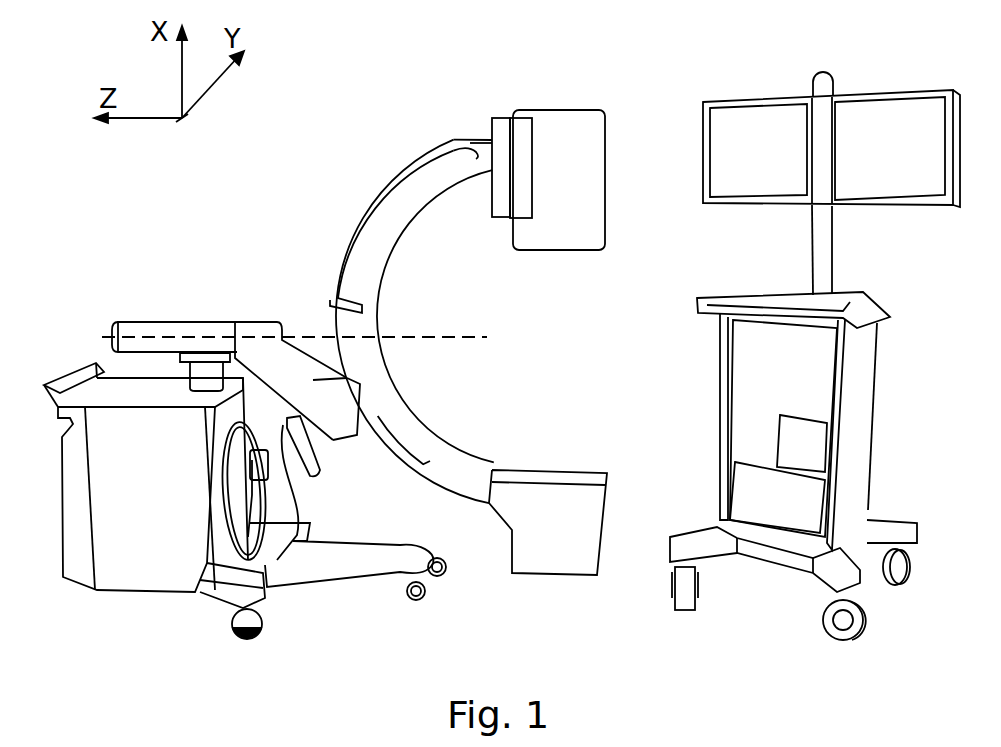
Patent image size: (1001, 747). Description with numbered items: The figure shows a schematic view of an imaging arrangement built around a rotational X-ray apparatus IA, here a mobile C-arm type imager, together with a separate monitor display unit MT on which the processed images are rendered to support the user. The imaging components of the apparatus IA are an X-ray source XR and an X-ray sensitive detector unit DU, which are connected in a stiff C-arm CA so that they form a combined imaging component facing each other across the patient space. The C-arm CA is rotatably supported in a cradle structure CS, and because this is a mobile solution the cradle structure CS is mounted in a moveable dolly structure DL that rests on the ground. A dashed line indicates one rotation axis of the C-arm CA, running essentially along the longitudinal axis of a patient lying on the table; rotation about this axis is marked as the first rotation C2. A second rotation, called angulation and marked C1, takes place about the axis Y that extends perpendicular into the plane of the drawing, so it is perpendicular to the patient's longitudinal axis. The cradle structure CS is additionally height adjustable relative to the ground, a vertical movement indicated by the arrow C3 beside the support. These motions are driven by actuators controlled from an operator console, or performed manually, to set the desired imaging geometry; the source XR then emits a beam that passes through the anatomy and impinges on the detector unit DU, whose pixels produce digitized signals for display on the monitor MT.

The rotational X-ray apparatus IA is at (128, 278).
The cradle structure CS is at (218, 322).
The dolly structure DL is at (128, 427).
The C-arm CA is at (420, 218).
The detector unit DU is at (548, 123).
The X-ray source XR is at (548, 467).
The display unit MT is at (860, 90).
The angulation C1 is at (390, 154).
The first rotation C2 is at (420, 355).
The vertical translation direction C3 is at (198, 275).